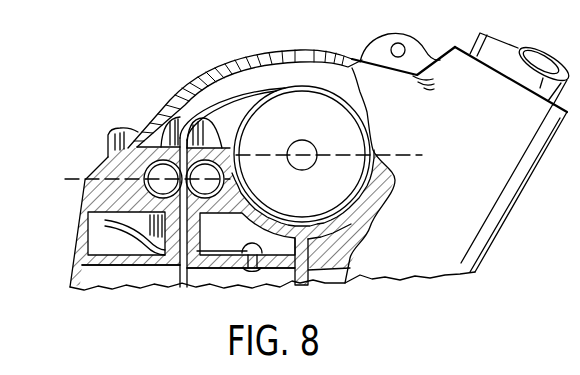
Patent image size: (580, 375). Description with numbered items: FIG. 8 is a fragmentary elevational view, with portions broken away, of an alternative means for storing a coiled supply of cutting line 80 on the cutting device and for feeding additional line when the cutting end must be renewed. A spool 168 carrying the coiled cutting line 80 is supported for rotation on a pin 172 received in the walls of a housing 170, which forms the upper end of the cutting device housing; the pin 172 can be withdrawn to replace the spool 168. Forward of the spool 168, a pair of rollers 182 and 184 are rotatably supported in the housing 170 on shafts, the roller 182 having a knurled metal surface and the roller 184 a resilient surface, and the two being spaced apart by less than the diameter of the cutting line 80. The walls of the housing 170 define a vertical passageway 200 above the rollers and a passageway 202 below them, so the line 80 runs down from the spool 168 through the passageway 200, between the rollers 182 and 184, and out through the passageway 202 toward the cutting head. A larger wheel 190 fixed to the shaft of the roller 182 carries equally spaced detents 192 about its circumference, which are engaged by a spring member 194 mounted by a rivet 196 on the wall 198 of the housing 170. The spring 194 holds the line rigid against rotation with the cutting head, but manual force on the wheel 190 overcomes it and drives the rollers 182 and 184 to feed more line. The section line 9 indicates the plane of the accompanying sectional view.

The section line 9 is at (65, 177).
The cutting line 80 is at (257, 94).
The spool 168 is at (299, 95).
The housing 170 is at (213, 70).
The pin 172 is at (294, 148).
The roller 182 is at (150, 177).
The roller 184 is at (212, 174).
The wheel 190 is at (110, 140).
The detents 192 is at (132, 128).
The spring member 194 is at (125, 247).
The rivet 196 is at (259, 274).
The wall 198 is at (146, 268).
The passageway 200 is at (191, 133).
The passageway 202 is at (192, 270).